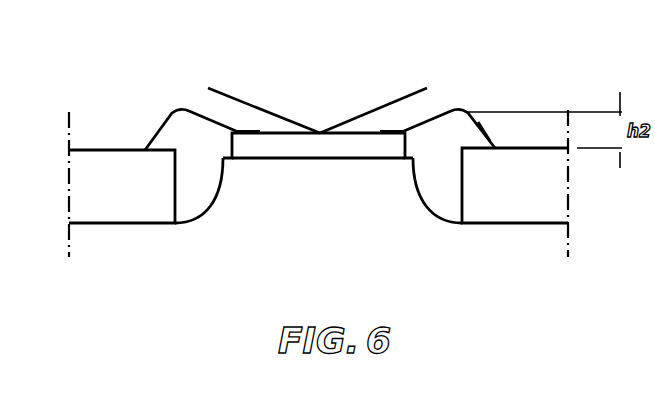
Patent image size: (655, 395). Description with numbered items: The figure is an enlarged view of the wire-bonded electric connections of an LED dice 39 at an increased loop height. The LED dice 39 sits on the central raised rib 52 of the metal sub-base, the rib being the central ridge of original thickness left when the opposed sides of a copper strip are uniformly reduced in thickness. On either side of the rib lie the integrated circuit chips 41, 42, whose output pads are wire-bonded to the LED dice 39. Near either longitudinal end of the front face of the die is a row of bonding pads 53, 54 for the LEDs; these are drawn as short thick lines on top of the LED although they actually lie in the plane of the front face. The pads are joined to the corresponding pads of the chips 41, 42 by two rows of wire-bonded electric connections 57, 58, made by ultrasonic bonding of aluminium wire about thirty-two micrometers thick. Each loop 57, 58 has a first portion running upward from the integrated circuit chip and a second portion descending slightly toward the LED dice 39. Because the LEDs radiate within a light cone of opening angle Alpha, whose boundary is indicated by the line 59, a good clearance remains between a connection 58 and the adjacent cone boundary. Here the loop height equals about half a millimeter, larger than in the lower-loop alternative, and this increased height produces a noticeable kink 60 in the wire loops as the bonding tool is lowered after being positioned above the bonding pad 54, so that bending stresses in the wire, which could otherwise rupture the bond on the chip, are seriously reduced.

The LED dice 39 is at (297, 145).
The integrated circuit chip 41 is at (93, 168).
The integrated circuit chip 42 is at (550, 193).
The central raised rib 52 is at (338, 203).
The bonding pads 53 is at (250, 134).
The bonding pads 54 is at (392, 134).
The wire-bonded electric connection 57 is at (167, 122).
The wire-bonded electric connection 58 is at (482, 132).
The light cone boundary line 59 is at (390, 105).
The kink 60 is at (457, 110).